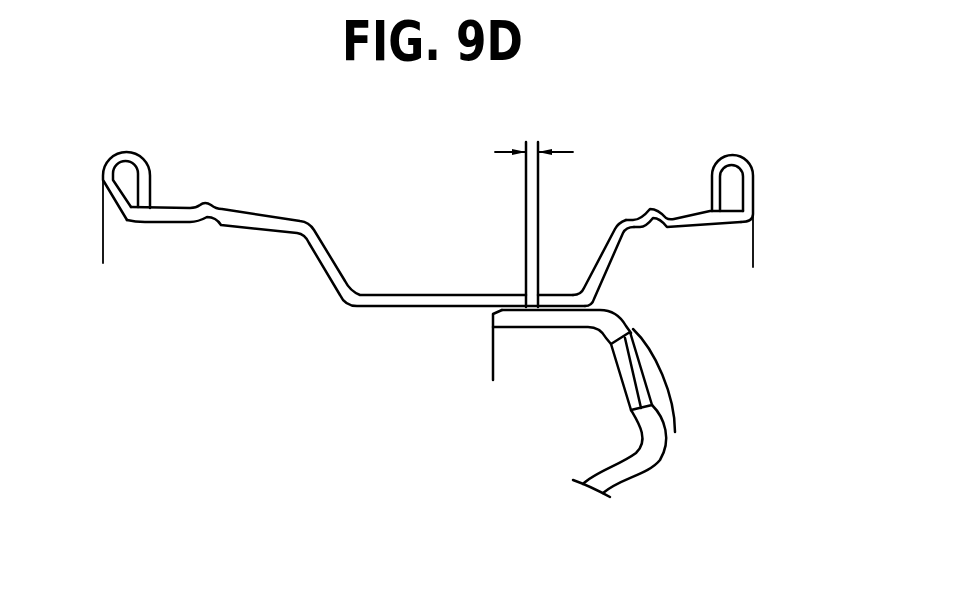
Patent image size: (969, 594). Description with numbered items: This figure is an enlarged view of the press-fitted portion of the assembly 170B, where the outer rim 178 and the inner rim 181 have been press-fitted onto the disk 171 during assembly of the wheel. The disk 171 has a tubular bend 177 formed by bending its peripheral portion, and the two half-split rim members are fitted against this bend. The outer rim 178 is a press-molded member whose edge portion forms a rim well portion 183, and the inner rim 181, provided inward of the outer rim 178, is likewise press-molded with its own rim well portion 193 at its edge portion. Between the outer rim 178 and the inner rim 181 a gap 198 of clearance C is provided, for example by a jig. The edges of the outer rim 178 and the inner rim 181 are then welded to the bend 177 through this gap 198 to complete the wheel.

The assembly 170B is at (313, 365).
The inner rim 181 is at (107, 162).
The outer rim 178 is at (755, 180).
The rim well portion 193 is at (410, 293).
The rim well portion 183 is at (560, 285).
The gap 198 is at (520, 288).
The tubular bend 177 is at (530, 328).
The disk 171 is at (675, 433).